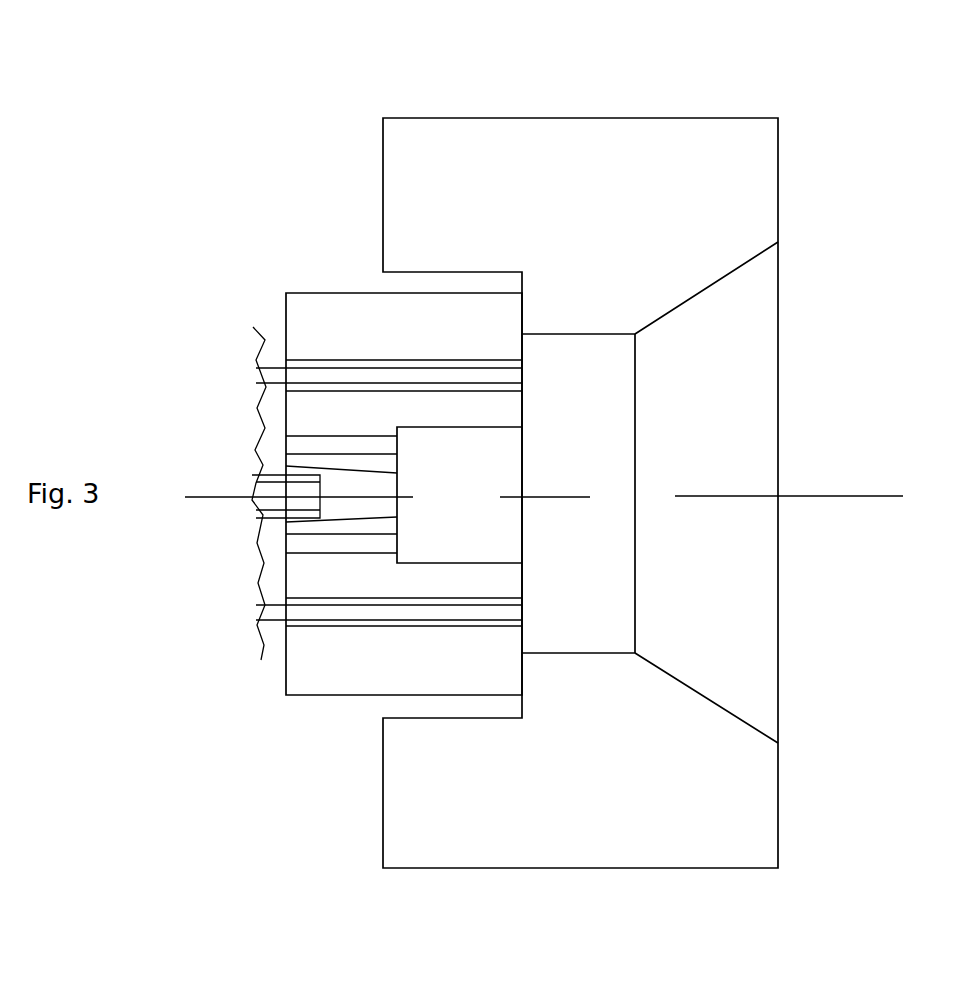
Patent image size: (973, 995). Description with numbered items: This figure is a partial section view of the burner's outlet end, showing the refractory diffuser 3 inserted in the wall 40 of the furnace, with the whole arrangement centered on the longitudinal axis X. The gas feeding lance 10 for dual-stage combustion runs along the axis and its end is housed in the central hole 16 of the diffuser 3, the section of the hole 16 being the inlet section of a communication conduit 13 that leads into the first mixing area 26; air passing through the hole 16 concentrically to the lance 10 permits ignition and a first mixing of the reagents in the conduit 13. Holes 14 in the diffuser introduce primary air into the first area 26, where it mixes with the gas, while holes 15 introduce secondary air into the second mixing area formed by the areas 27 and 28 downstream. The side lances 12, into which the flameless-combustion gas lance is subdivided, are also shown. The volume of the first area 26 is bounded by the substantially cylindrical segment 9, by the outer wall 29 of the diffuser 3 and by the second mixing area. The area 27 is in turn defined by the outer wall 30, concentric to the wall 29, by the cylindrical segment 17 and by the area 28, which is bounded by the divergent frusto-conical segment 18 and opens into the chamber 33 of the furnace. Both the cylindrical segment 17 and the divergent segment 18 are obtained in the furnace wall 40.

The refractory diffuser 3 is at (346, 268).
The cylindrical segment 9 is at (507, 428).
The gas feeding lance 10 is at (272, 487).
The side lances 12 is at (313, 375).
The communication conduit 13 is at (332, 509).
The holes for primary air 14 is at (320, 447).
The holes for secondary air 15 is at (355, 365).
The central hole 16 is at (287, 520).
The cylindrical segment 17 is at (612, 335).
The divergent segment 18 is at (737, 272).
The first mixing area 26 is at (448, 546).
The area of second mixing area 27 is at (562, 536).
The area of second mixing area 28 is at (688, 539).
The outer wall of diffuser 29 is at (400, 463).
The outer wall of diffuser 30 is at (522, 588).
The chamber of the furnace 33 is at (817, 543).
The wall of the furnace 40 is at (627, 172).
The longitudinal axis X is at (903, 495).